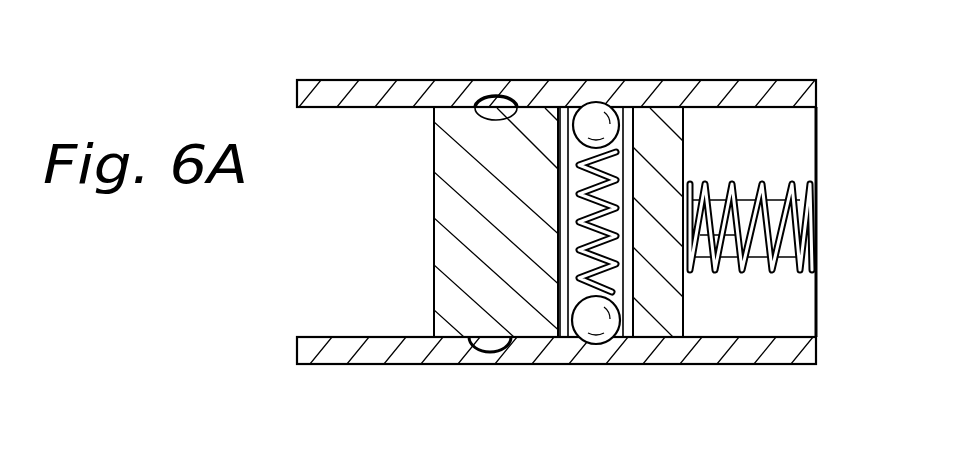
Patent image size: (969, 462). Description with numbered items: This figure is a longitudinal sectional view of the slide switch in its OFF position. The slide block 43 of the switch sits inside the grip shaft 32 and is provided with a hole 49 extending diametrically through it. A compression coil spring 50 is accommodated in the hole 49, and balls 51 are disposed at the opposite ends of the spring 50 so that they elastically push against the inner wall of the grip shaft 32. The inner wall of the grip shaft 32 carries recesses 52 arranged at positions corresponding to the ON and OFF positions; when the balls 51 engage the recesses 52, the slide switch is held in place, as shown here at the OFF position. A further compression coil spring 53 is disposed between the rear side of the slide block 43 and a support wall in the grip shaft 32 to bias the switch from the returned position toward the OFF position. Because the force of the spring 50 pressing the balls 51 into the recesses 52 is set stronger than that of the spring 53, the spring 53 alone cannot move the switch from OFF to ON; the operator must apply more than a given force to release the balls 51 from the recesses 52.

The grip shaft 32 is at (350, 352).
The slide block 43 is at (453, 122).
The hole 49 is at (618, 182).
The compression coil spring 50 is at (620, 293).
The balls 51 is at (613, 113).
The recesses 52 is at (481, 118).
The compression coil spring 53 is at (792, 203).